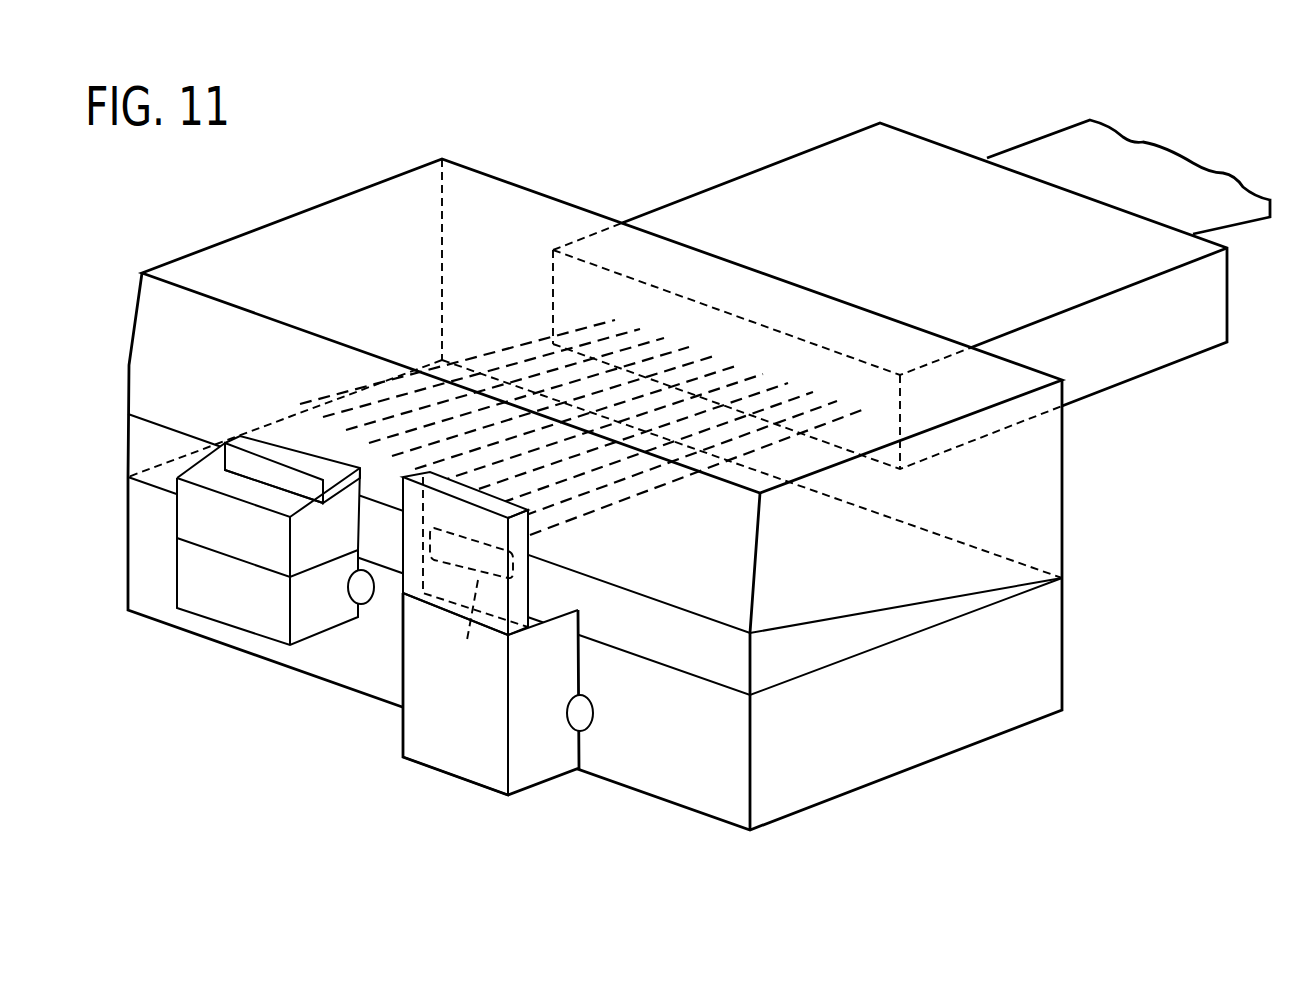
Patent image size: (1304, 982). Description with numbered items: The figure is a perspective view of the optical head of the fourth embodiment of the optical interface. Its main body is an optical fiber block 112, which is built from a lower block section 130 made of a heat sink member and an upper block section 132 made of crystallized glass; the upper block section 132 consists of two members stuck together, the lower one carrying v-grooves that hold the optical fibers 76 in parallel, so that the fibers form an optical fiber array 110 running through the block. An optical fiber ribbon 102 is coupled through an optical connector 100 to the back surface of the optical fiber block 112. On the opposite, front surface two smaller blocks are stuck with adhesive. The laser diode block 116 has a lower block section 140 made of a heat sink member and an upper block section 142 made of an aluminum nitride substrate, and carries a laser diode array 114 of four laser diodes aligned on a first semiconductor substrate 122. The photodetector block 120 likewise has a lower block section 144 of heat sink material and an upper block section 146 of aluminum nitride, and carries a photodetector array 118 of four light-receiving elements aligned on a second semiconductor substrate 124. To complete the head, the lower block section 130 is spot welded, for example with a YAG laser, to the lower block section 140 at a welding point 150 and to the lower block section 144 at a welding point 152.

The optical fiber 76 is at (581, 409).
The optical connector 100 is at (890, 287).
The optical fiber ribbon 102 is at (1128, 157).
The optical fiber array 110 is at (581, 392).
The optical fiber block 112 is at (586, 427).
The laser diode array 114 is at (281, 436).
The laser diode block 116 is at (223, 524).
The photodetector array 118 is at (483, 633).
The photodetector block 120 is at (524, 710).
The first semiconductor substrate 122 is at (274, 436).
The second semiconductor substrate 124 is at (471, 604).
The lower block section 130 is at (629, 653).
The upper block section 132 is at (629, 523).
The lower block section 140 is at (215, 591).
The upper block section 142 is at (216, 510).
The lower block section 144 is at (516, 708).
The upper block section 146 is at (562, 572).
The welding point 150 is at (335, 599).
The welding point 152 is at (615, 716).